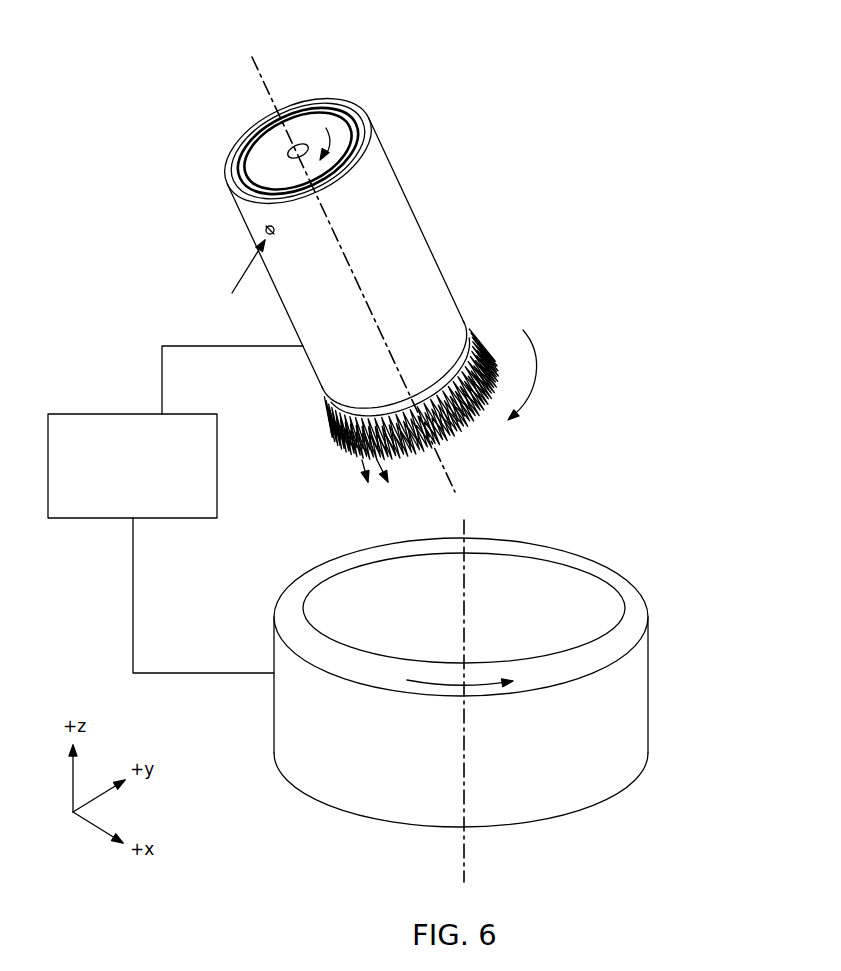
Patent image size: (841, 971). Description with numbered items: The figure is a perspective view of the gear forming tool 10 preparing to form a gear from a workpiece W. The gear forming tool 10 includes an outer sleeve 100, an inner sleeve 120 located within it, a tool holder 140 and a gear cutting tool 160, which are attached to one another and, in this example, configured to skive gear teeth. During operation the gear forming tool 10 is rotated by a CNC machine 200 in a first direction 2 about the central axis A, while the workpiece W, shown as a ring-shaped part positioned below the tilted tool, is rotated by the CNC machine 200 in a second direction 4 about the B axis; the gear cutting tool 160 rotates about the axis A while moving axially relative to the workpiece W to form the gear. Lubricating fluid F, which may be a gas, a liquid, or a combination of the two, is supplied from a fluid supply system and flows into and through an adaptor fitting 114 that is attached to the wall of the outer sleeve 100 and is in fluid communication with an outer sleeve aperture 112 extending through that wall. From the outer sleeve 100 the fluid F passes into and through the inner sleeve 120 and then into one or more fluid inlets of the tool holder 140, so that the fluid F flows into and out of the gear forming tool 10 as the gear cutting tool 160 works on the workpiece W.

The gear forming tool 10 is at (448, 92).
The outer sleeve 100 is at (436, 236).
The inner sleeve 120 is at (235, 172).
The tool holder 140 is at (263, 155).
The outer sleeve aperture 112 is at (275, 232).
The adaptor fitting 114 is at (268, 228).
The gear cutting tool 160 is at (502, 314).
The first direction 2 is at (537, 373).
The CNC machine 200 is at (117, 410).
The workpiece W is at (640, 583).
The central axis A is at (256, 60).
The B axis B is at (465, 527).
The second direction 4 is at (440, 685).
The fluid F is at (242, 278).